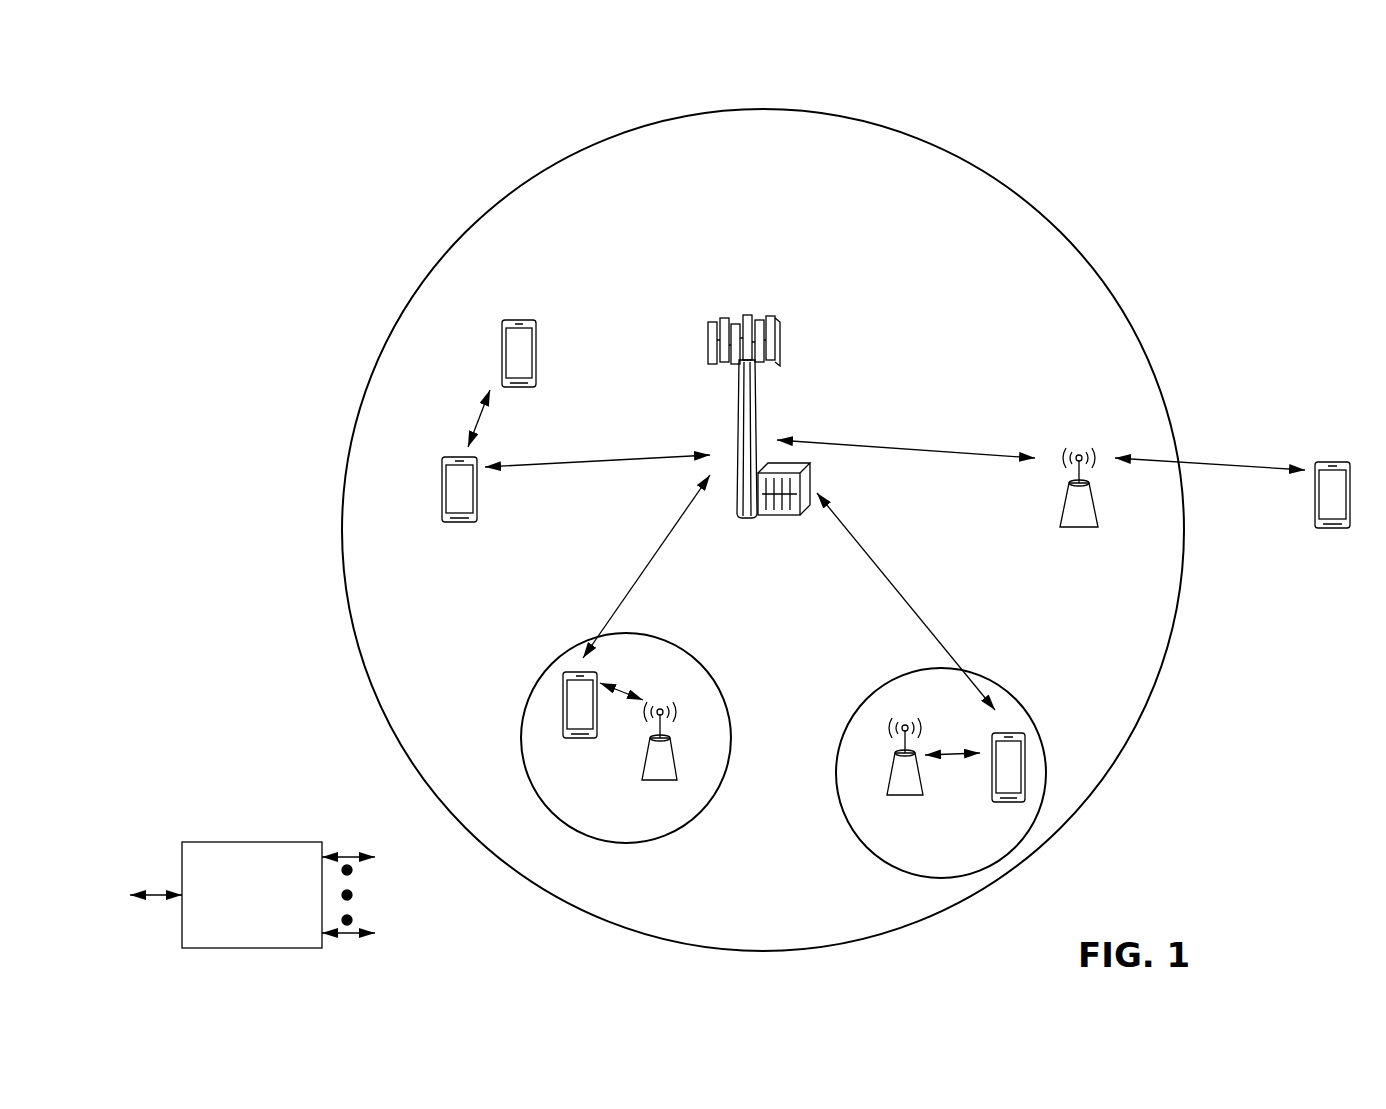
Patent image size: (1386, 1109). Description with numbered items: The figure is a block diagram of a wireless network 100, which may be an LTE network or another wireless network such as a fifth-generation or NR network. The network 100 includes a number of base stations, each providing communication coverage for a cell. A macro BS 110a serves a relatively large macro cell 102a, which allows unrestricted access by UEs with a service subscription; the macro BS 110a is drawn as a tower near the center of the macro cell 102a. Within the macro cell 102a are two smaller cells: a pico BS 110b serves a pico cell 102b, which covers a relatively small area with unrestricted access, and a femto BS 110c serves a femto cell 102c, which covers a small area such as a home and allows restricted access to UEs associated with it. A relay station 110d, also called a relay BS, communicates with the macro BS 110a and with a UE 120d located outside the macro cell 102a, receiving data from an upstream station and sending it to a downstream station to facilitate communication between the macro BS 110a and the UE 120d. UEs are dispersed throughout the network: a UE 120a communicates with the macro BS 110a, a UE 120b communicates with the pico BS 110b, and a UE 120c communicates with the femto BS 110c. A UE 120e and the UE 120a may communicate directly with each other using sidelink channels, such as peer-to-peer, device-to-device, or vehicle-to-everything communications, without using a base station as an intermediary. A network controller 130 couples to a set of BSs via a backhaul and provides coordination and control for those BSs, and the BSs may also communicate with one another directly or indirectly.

The wireless network 100 is at (238, 104).
The macro cell 102a is at (1043, 212).
The pico cell 102b is at (718, 670).
The femto cell 102c is at (878, 683).
The macro BS 110a is at (752, 306).
The pico BS 110b is at (685, 766).
The femto BS 110c is at (880, 790).
The relay station 110d is at (1079, 445).
The UE 120a is at (442, 485).
The UE 120b is at (568, 740).
The UE 120c is at (994, 805).
The UE 120d is at (1340, 460).
The UE 120e is at (502, 340).
The network controller 130 is at (250, 842).